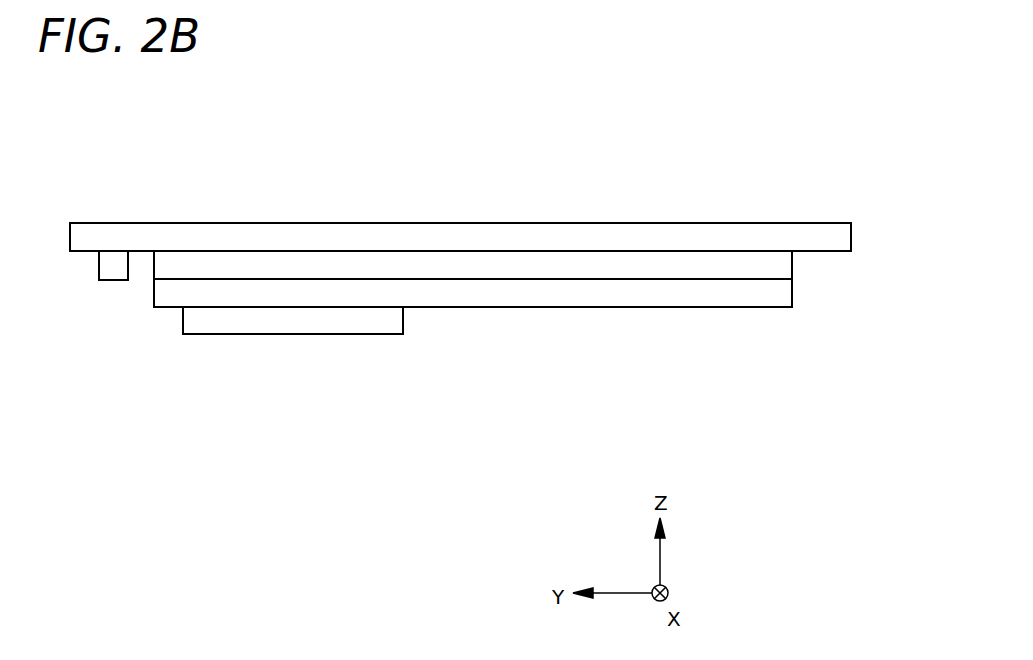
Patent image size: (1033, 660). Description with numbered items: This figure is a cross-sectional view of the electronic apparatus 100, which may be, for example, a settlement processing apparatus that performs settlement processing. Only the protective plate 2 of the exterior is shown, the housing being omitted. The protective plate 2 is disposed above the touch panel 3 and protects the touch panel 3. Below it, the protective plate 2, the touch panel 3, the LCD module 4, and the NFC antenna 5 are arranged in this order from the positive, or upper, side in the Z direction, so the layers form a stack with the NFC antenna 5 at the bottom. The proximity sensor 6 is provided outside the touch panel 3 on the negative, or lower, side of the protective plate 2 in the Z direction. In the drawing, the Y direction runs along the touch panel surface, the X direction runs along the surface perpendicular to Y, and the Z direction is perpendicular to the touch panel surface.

The electronic apparatus 100 is at (469, 186).
The protective plate 2 is at (736, 223).
The touch panel 3 is at (793, 265).
The LCD module 4 is at (558, 307).
The NFC antenna 5 is at (347, 335).
The proximity sensor 6 is at (111, 280).